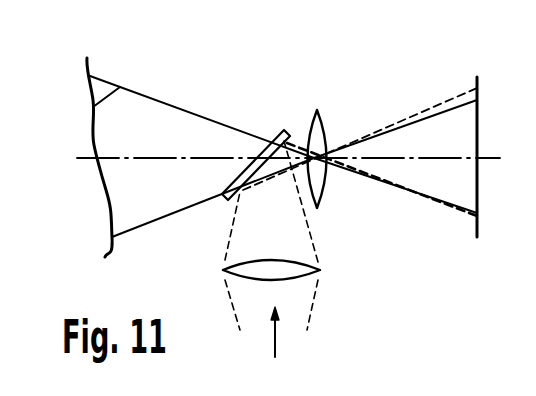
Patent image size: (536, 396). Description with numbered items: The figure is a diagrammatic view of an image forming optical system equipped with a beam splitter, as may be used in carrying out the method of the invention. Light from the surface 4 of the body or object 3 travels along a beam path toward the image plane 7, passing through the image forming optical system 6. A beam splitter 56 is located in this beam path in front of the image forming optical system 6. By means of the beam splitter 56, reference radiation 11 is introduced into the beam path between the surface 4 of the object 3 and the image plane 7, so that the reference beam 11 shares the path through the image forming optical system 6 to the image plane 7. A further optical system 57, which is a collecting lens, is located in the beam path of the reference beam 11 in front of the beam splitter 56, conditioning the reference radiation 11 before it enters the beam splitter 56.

The body or object 3 is at (80, 78).
The surface 4 is at (121, 87).
The beam splitter 56 is at (280, 137).
The image forming optical system 6 is at (320, 128).
The image plane 7 is at (477, 120).
The further optical system 57 is at (312, 271).
The reference radiation 11 is at (276, 345).